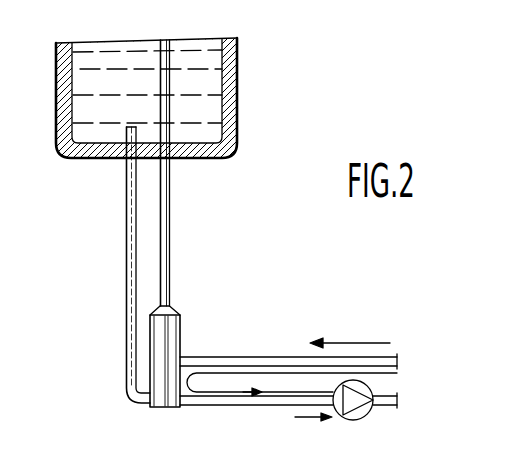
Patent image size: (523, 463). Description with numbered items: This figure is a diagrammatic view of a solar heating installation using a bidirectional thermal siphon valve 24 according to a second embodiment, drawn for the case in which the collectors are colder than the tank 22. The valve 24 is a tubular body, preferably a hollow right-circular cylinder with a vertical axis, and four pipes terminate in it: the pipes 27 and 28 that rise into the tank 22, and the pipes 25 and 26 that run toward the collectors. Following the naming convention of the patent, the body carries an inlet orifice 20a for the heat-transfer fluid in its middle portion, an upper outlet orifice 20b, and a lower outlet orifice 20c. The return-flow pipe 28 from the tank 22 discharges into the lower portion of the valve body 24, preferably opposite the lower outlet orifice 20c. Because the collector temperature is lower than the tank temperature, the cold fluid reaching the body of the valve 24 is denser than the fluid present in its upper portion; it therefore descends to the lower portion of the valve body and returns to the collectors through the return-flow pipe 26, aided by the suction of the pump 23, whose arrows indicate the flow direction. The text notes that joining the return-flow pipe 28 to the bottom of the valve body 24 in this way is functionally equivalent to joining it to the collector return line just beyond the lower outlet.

The container / melt vessel 22 is at (237, 88).
The supply tube 27 is at (170, 210).
The return-flow pipe 28 is at (128, 210).
The bidirectional thermal siphon valve 24 is at (162, 409).
The outer pipe upper wall 20a is at (183, 359).
The inner tube loop 20b is at (166, 306).
The lower outlet orifice 20c is at (188, 408).
The inlet line 25 is at (280, 356).
The return-flow pipe 26 is at (252, 406).
The pump 23 is at (362, 418).